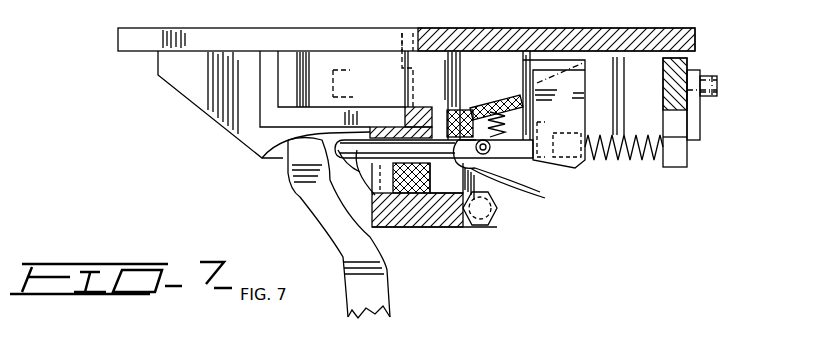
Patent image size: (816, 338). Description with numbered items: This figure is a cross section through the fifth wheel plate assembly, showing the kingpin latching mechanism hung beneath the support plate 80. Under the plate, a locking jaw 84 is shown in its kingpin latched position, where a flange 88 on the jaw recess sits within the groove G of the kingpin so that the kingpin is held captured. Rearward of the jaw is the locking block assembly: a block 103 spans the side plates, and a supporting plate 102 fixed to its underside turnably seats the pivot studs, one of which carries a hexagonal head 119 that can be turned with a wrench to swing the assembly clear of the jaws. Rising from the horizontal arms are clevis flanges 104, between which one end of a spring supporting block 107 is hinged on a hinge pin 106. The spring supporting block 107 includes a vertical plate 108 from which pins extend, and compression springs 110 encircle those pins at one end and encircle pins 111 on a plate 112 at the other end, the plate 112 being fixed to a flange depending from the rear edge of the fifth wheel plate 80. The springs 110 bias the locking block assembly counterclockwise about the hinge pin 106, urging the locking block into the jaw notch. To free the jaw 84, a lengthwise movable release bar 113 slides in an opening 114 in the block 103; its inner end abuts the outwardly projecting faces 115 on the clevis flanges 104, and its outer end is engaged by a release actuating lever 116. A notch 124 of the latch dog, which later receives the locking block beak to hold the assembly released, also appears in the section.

The support plate 80 is at (528, 29).
The locking jaw 84 is at (318, 100).
The flange 88 is at (336, 72).
The groove G is at (356, 95).
The block 103 is at (285, 139).
The release actuating lever 116 is at (298, 167).
The release bar 113 is at (343, 160).
The opening 114 is at (358, 155).
The clevis flange 104 is at (490, 160).
The notch 124 is at (478, 112).
The spring supporting block 107 is at (547, 153).
The outwardly projecting face 115 is at (486, 155).
The hinge pin 106 is at (478, 160).
The vertical plate 108 is at (550, 128).
The compression spring 110 is at (614, 158).
The pin 111 is at (630, 140).
The plate 112 is at (675, 157).
The supporting plate 102 is at (432, 227).
The hexagonal head 119 is at (477, 227).